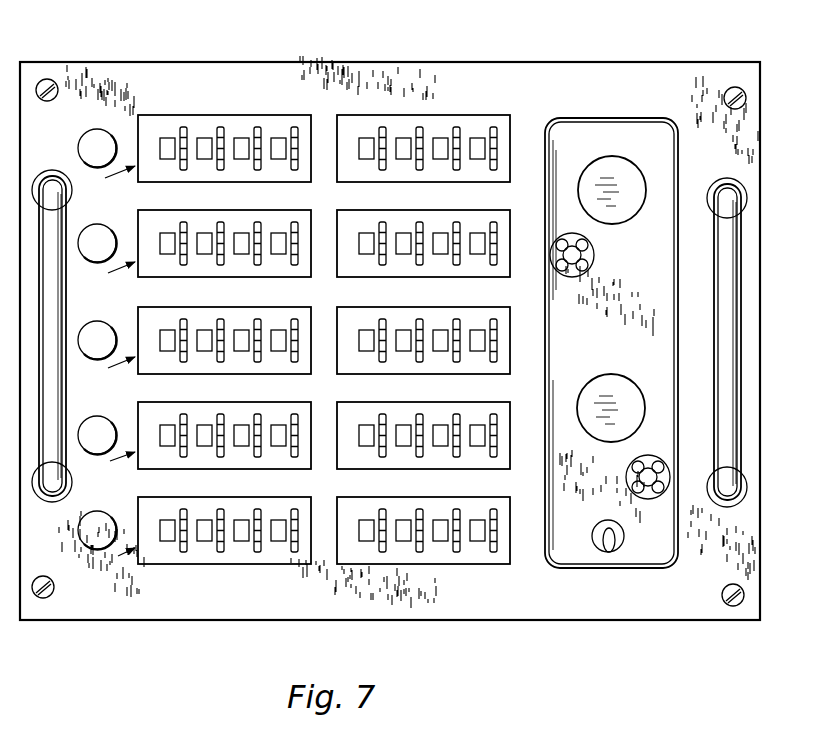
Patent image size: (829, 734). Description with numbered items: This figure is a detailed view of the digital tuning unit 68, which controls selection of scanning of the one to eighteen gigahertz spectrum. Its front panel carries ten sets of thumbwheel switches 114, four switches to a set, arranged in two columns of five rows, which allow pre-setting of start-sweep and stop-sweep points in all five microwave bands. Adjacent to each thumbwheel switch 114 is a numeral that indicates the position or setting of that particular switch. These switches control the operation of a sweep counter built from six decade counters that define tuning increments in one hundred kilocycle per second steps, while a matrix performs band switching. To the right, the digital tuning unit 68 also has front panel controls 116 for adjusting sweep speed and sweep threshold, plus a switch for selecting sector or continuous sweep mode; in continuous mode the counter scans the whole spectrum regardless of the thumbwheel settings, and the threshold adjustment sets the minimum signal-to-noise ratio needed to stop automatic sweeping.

The digital tuning unit 68 is at (76, 54).
The thumbwheel switches 114 is at (295, 127).
The front panel controls 116 is at (640, 397).